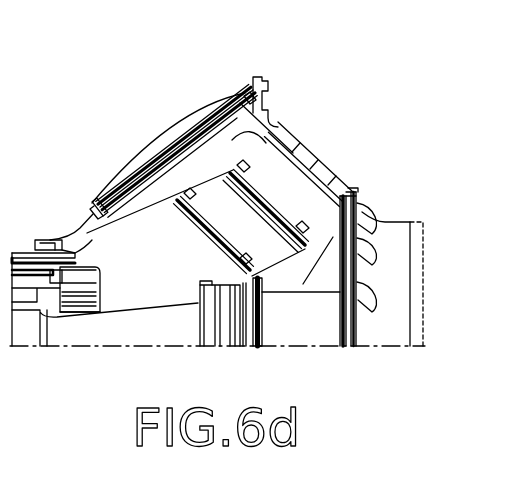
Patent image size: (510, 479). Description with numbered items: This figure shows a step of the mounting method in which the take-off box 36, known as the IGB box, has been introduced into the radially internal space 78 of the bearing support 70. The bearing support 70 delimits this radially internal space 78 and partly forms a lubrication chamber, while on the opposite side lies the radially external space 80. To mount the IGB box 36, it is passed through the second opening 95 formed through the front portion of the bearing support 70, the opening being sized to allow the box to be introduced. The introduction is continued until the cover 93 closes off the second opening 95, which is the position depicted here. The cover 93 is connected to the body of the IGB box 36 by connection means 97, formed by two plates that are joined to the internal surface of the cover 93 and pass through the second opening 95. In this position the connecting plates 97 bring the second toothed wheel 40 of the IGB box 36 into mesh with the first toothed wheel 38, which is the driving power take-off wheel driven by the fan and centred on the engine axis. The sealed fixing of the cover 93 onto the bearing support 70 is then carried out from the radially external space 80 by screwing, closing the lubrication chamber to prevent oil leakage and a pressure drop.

The take-off box 36 is at (293, 180).
The first toothed wheel 38 is at (262, 318).
The second toothed wheel 40 is at (170, 190).
The bearing support 70 is at (274, 104).
The radially internal space 78 is at (362, 213).
The radially external space 80 is at (126, 157).
The cover 93 is at (165, 140).
The second opening 95 is at (100, 196).
The connection means 97 is at (168, 208).